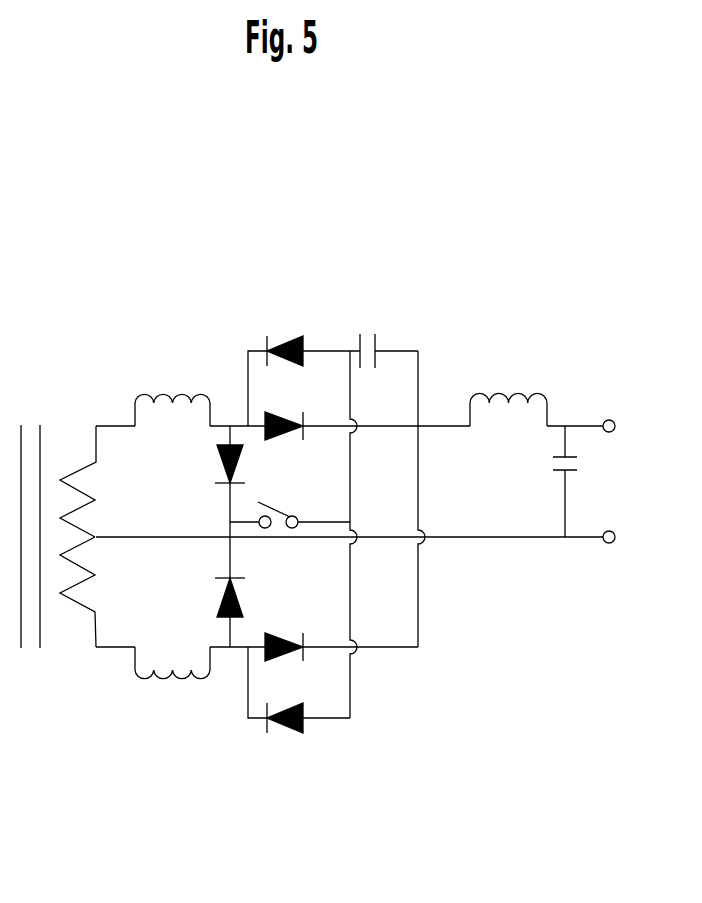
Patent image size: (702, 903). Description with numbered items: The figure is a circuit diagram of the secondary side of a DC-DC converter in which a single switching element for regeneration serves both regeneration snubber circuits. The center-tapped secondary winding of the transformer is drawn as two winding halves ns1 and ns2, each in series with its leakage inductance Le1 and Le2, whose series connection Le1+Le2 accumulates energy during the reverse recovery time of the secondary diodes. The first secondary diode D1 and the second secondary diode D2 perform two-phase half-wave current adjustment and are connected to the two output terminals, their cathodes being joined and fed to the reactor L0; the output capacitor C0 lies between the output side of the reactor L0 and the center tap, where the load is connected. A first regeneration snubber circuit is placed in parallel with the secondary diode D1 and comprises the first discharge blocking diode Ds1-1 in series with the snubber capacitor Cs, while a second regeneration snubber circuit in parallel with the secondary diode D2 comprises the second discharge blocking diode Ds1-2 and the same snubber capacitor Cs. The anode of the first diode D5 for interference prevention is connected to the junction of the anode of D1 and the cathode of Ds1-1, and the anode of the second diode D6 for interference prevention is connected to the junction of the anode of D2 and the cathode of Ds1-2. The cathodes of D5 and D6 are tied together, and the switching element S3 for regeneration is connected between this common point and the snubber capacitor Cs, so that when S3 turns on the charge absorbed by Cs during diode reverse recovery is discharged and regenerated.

The secondary winding ns1 is at (99, 481).
The secondary winding ns2 is at (100, 592).
The leakage inductance Le1 is at (172, 390).
The leakage inductance Le2 is at (172, 681).
The first diode for interference prevention D5 is at (216, 467).
The second diode for interference prevention D6 is at (216, 599).
The first secondary diode D1 is at (287, 443).
The second secondary diode D2 is at (290, 634).
The first discharge blocking diode Ds1-1 is at (299, 381).
The second discharge blocking diode Ds1-2 is at (299, 690).
The switching element for regeneration S3 is at (290, 507).
The snubber capacitor Cs is at (384, 335).
The reactor L0 is at (508, 384).
The output capacitor C0 is at (580, 481).